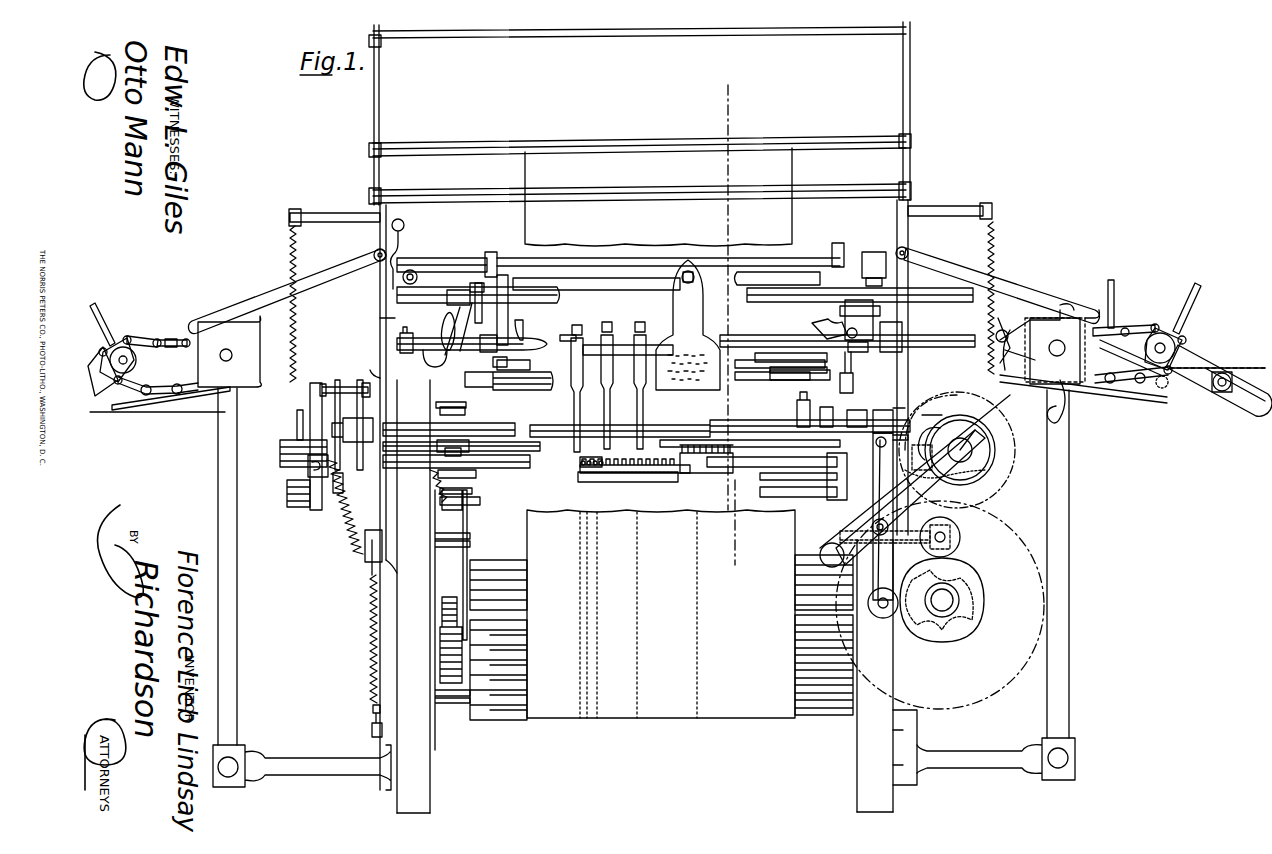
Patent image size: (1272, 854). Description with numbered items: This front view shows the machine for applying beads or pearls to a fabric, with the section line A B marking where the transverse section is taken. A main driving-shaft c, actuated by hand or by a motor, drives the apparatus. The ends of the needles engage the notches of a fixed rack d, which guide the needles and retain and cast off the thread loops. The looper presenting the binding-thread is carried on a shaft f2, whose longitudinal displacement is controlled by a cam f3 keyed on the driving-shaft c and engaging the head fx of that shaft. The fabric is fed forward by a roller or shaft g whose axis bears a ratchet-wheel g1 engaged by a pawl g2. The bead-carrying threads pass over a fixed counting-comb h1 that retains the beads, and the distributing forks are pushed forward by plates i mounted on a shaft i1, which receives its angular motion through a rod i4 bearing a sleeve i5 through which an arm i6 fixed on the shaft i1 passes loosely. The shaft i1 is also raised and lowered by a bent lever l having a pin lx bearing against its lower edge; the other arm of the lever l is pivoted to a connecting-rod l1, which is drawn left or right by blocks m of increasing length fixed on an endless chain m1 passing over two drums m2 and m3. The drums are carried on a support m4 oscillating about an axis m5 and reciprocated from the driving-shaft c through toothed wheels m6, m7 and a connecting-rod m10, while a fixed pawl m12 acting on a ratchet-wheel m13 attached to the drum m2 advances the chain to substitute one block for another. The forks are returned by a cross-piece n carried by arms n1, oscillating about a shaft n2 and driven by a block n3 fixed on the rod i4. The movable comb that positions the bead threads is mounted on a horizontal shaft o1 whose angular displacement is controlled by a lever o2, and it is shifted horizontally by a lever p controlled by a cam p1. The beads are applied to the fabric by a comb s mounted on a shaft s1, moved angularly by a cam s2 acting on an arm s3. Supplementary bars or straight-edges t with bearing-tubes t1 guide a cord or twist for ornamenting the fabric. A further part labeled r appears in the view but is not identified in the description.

The section line A is at (723, 286).
The section line B is at (734, 534).
The main driving-shaft c is at (965, 450).
The fixed rack d is at (620, 483).
The head of the looper shaft fx is at (925, 470).
The looper shaft f2 is at (813, 470).
The cam f3 is at (980, 458).
The fabric-feed roller or shaft g is at (950, 600).
The ratchet-wheel g1 is at (470, 740).
The pawl g2 is at (465, 605).
The counting-comb h1 is at (790, 372).
The plates i is at (688, 325).
The plate shaft i1 is at (854, 275).
The rod i4 is at (857, 300).
The sleeve i5 is at (870, 335).
The arm i6 is at (865, 393).
The bent lever l is at (445, 288).
The pin lx is at (403, 254).
The connecting-rod l1 is at (460, 330).
The blocks m is at (108, 318).
The endless chain m1 is at (150, 338).
The drum m2 is at (220, 356).
The drum m3 is at (128, 352).
The support m4 is at (196, 404).
The axis m5 is at (1068, 758).
The toothed wheel m6 is at (957, 400).
The toothed wheel m7 is at (1090, 404).
The connecting-rod m10 is at (1020, 330).
The fixed pawl m12 is at (250, 300).
The ratchet-wheel m13 is at (215, 330).
The cross-piece n is at (760, 360).
The arms n1 is at (512, 340).
The shaft n2 is at (511, 258).
The block n3 is at (820, 325).
The horizontal shaft o1 is at (495, 428).
The lever o2 is at (315, 395).
The lever p is at (880, 575).
The cam p1 is at (968, 628).
The bar r is at (546, 392).
The comb s is at (706, 463).
The shaft s1 is at (830, 567).
The cam s2 is at (968, 580).
The arm s3 is at (950, 537).
The supplementary bars or straight-edges t is at (614, 345).
The bearing-tubes t1 is at (578, 410).